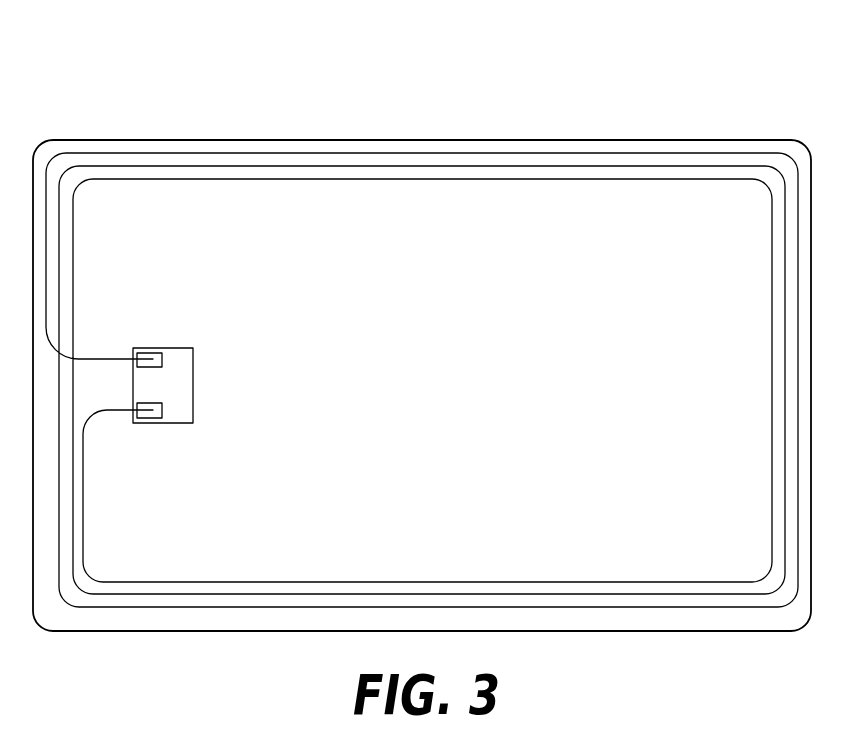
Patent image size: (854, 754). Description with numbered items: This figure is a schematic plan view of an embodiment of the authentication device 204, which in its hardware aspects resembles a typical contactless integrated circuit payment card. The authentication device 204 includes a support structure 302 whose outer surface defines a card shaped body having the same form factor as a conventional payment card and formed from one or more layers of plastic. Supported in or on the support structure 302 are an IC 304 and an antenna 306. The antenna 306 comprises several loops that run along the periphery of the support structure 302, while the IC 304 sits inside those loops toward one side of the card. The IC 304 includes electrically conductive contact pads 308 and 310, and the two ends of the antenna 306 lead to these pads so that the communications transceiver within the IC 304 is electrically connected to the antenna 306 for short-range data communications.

The authentication device 204 is at (624, 108).
The support structure 302 is at (426, 212).
The IC 304 is at (194, 376).
The antenna 306 is at (736, 155).
The contact pad 308 is at (149, 358).
The contact pad 310 is at (149, 414).